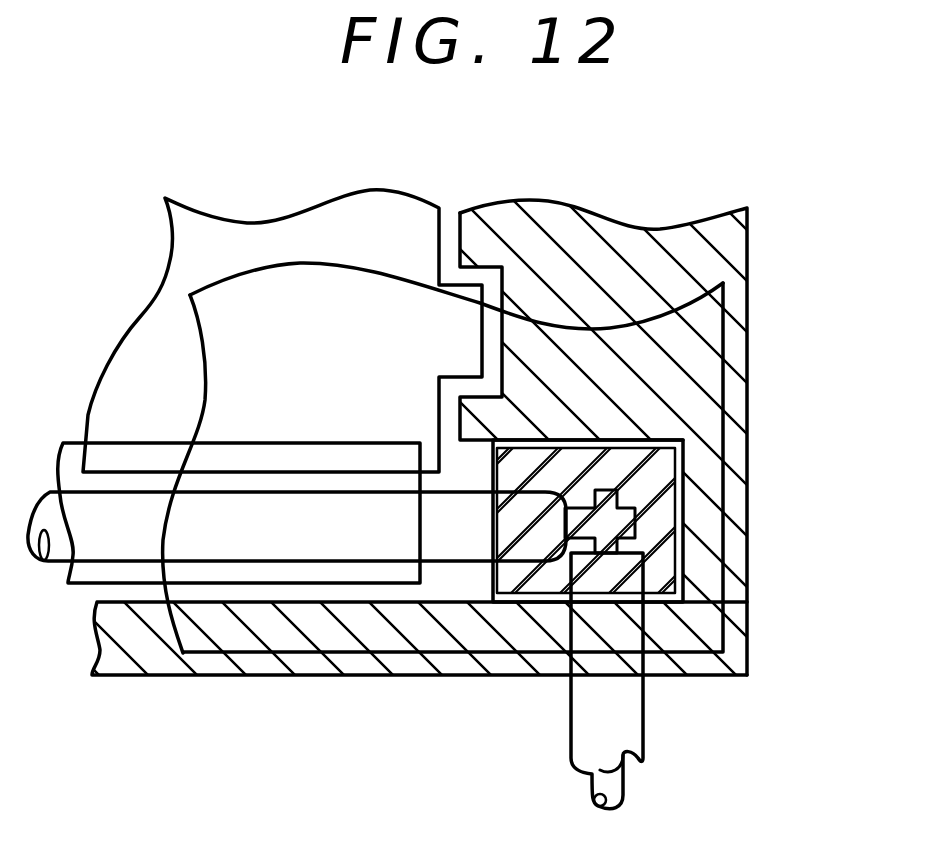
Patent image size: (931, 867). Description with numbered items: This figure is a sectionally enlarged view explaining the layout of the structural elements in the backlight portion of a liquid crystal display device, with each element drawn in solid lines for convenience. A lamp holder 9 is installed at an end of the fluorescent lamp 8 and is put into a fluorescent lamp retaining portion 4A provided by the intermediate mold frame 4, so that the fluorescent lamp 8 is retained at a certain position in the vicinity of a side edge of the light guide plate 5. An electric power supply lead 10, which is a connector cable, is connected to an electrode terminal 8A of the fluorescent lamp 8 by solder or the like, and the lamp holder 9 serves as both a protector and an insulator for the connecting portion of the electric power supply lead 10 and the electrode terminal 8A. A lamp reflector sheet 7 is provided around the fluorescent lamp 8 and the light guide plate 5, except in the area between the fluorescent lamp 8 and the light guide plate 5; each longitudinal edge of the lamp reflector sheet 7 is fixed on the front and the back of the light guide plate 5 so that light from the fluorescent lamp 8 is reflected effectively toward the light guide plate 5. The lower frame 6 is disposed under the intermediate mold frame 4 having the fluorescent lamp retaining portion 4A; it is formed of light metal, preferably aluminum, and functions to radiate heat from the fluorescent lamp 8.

The intermediate mold frame 4 is at (622, 240).
The fluorescent lamp retaining portion 4A is at (503, 677).
The light guide plate 5 is at (225, 245).
The lower frame 6 is at (327, 260).
The lamp reflector sheet 7 is at (266, 445).
The fluorescent lamp 8 is at (460, 503).
The electrode terminal 8A is at (607, 525).
The lamp holder 9 is at (662, 465).
The electric power supply lead 10 is at (630, 708).